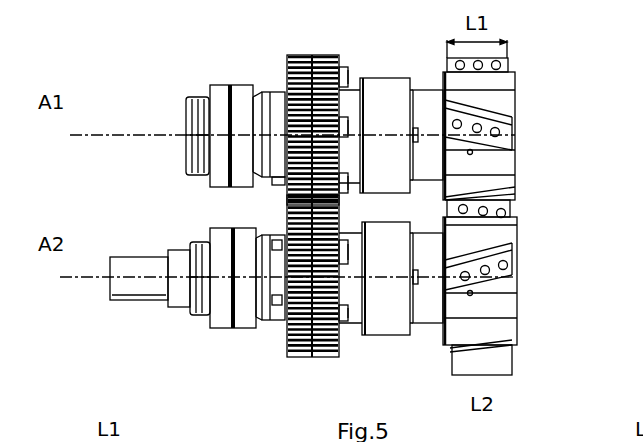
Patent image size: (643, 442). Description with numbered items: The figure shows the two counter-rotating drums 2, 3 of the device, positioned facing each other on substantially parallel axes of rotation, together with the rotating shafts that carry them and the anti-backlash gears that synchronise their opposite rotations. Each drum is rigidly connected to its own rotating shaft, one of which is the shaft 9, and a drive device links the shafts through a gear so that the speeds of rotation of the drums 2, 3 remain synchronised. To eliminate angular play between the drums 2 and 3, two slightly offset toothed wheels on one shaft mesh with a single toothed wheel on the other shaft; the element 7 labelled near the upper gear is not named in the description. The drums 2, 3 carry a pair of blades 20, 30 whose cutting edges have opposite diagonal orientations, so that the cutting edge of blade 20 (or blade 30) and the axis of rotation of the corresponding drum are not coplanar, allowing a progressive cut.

The counter-rotating drum 2 is at (504, 129).
The counter-rotating drum 3 is at (509, 287).
The fastening screw 7 is at (351, 91).
The rotating shaft 9 is at (348, 322).
The blade 20 is at (510, 143).
The blade 30 is at (510, 252).